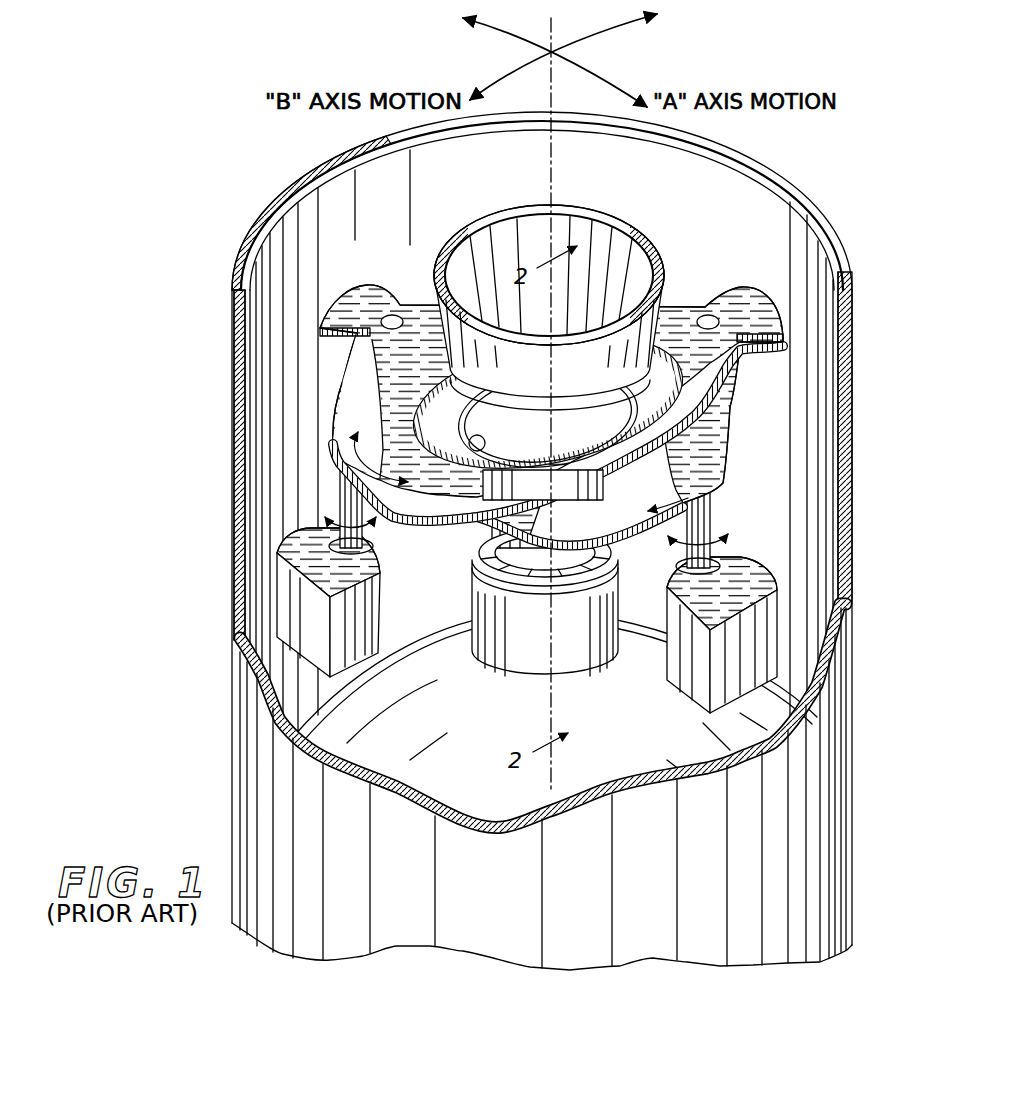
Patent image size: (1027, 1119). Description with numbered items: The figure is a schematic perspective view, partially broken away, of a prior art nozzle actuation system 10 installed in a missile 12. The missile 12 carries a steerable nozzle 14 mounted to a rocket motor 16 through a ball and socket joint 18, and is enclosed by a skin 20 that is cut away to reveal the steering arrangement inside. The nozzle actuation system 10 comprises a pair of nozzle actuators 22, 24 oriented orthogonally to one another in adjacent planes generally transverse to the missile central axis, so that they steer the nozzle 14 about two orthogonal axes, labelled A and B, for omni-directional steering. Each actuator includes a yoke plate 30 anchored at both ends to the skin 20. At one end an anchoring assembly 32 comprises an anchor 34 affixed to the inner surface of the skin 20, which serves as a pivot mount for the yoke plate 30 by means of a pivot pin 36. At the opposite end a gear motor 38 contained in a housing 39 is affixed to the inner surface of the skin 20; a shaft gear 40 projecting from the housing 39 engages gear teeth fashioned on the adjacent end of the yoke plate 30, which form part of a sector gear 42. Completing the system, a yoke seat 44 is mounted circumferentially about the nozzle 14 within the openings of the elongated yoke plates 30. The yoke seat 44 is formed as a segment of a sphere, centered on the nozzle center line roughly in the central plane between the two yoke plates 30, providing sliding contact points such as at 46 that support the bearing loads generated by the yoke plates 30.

The nozzle actuation system 10 is at (569, 541).
The missile 12 is at (858, 805).
The steerable nozzle 14 is at (460, 232).
The rocket motor 16 is at (555, 691).
The ball and socket joint 18 is at (501, 650).
The skin 20 is at (823, 228).
The nozzle actuator 22 is at (727, 385).
The nozzle actuator 24 is at (648, 545).
The yoke plate 30 is at (727, 376).
The anchoring assembly 32 is at (557, 391).
The anchor 34 is at (341, 290).
The pivot pin 36 is at (392, 315).
The gear motor 38 is at (546, 620).
The housing 39 is at (777, 613).
The shaft gear 40 is at (715, 528).
The sector gear 42 is at (712, 492).
The yoke seat 44 is at (548, 402).
The sliding contact point 46 is at (476, 451).